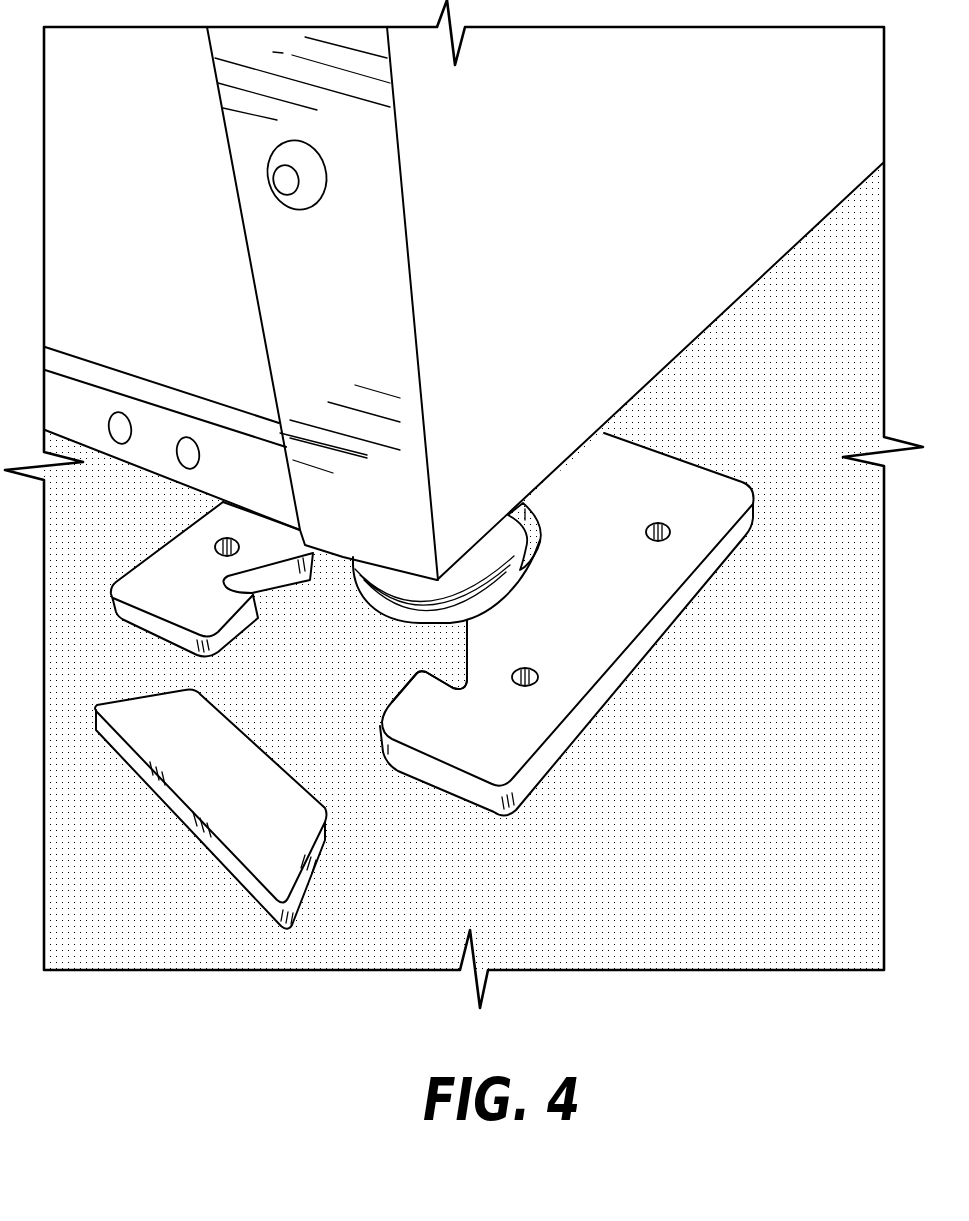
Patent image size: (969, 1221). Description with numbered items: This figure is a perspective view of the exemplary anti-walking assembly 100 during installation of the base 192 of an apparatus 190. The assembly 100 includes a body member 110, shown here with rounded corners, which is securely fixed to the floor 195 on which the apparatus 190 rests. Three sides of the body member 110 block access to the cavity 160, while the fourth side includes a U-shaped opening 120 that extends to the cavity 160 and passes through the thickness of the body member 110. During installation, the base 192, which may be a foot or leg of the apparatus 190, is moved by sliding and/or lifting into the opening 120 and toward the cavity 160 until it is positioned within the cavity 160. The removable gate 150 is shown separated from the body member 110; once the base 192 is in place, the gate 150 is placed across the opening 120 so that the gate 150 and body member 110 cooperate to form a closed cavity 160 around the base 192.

The anti-walking assembly 100 is at (703, 430).
The body member 110 is at (627, 637).
The opening 120 is at (333, 753).
The removable gate 150 is at (137, 745).
The cavity 160 is at (525, 535).
The apparatus 190 is at (594, 303).
The base 192 is at (440, 613).
The floor 195 is at (785, 943).